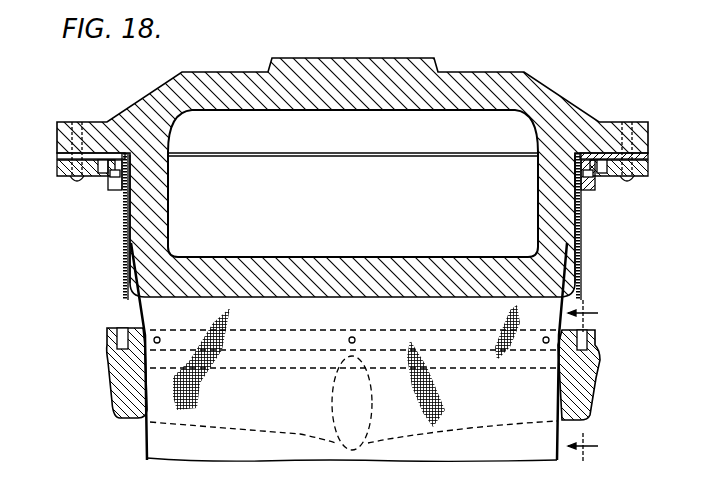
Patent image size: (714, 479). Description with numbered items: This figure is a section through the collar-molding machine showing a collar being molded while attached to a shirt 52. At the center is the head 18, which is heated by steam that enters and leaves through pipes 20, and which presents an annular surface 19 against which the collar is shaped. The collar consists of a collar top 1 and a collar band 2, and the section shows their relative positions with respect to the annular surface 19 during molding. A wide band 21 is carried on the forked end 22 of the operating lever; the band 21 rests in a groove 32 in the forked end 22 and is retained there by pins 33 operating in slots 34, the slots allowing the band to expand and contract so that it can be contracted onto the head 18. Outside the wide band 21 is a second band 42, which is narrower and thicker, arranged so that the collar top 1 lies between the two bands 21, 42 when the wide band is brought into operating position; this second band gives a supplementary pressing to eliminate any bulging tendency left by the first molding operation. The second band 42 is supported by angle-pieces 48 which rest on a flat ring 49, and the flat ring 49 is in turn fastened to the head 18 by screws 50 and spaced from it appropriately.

The collar top 1 is at (126, 229).
The collar band 2 is at (130, 243).
The head 18 is at (466, 72).
The annular surface 19 is at (130, 198).
The pipes 20 is at (594, 381).
The wide band 21 is at (127, 273).
The forked end 22 is at (123, 383).
The groove 32 is at (122, 328).
The pins 33 is at (159, 337).
The slots 34 is at (552, 335).
The second band 42 is at (122, 192).
The angle-pieces 48 is at (120, 186).
The flat ring 49 is at (56, 169).
The screws 50 is at (72, 178).
The shirt 52 is at (157, 439).